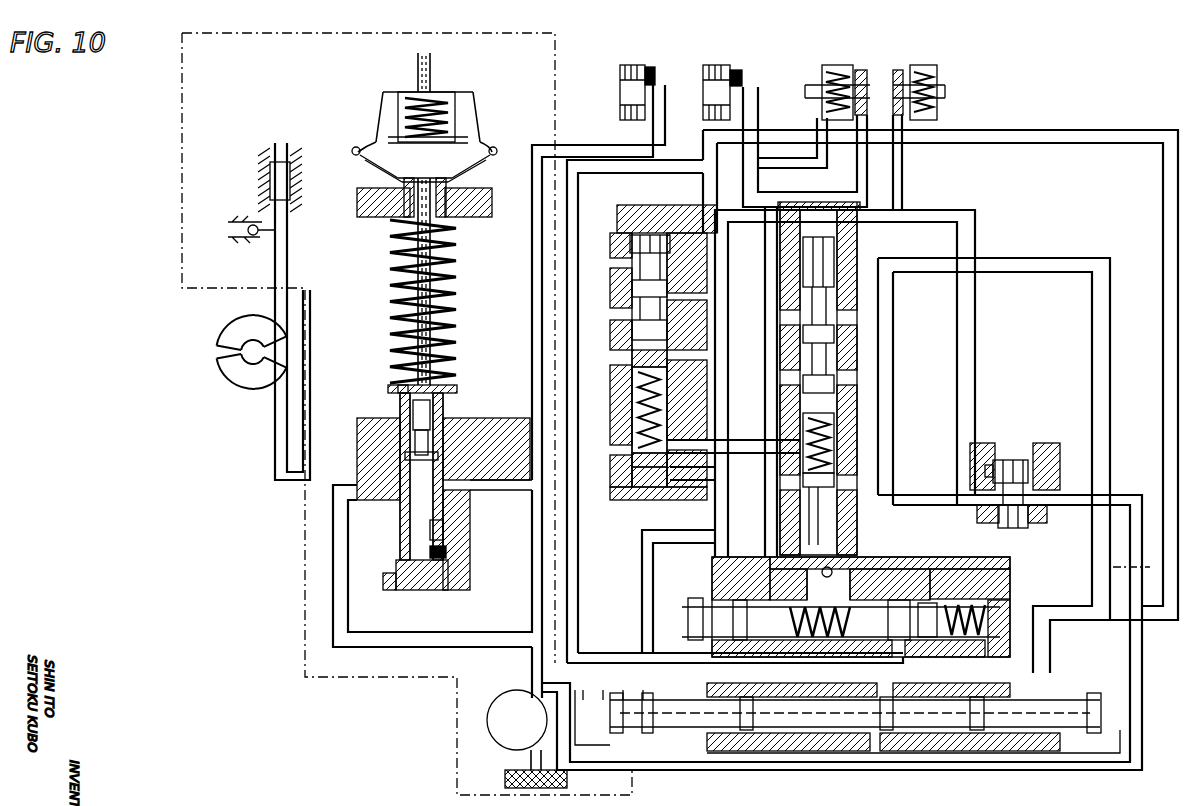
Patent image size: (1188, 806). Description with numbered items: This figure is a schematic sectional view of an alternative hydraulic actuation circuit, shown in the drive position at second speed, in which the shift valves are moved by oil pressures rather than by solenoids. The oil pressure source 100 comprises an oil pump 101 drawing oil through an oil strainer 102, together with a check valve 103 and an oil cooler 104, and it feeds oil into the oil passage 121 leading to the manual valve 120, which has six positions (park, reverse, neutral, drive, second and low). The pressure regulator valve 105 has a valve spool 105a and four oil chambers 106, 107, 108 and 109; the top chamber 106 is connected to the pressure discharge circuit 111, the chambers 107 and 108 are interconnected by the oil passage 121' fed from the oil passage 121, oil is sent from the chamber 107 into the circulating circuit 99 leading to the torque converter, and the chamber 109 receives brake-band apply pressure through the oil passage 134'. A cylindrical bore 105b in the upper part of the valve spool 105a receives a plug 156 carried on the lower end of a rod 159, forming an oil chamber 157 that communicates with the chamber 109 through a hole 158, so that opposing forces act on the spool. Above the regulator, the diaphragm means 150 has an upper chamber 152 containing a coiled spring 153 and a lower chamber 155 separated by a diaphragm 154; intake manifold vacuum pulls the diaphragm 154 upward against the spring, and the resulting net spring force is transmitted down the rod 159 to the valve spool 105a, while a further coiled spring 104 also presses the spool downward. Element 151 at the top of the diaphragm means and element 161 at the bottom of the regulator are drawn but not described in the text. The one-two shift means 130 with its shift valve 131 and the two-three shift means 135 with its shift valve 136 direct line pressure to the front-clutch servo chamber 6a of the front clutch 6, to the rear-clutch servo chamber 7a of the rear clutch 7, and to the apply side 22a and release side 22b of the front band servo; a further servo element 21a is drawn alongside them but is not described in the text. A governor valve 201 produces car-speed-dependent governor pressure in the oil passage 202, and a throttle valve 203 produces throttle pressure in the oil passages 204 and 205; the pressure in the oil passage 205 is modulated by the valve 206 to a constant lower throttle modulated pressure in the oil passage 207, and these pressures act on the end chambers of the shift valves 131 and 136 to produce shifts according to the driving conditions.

The clutch 6 is at (631, 64).
The front-clutch servo chamber 6a is at (655, 74).
The rear clutch 7 is at (715, 64).
The rear-clutch servo chamber 7a is at (742, 76).
The front band release side 22b is at (822, 66).
The apply side of the brake band servo 22a is at (862, 70).
The brake servo piston 21a is at (900, 70).
The circulating circuit 99 is at (275, 455).
The oil pressure source 100 is at (632, 790).
The oil pump 101 is at (504, 700).
The oil strainer 102 is at (506, 774).
The check valve 103 is at (250, 238).
The coiled spring 104 is at (288, 176).
The pressure regulator valve 105 is at (371, 410).
The valve spool 105a is at (456, 414).
The cylindrical bore 105b is at (392, 392).
The oil chamber 106 is at (445, 452).
The oil chamber 107 is at (450, 528).
The oil chamber 108 is at (450, 560).
The oil chamber 109 is at (428, 575).
The pressure discharge circuit 111 is at (398, 456).
The manual valve 120 is at (678, 716).
The oil passage 121 is at (687, 644).
The oil passage 121' is at (384, 561).
The 1-2 shift means 130 is at (787, 346).
The 1-2 shift valve 131 is at (843, 248).
The oil passage 134' is at (487, 454).
The 2-3 shift means 135 is at (600, 352).
The 2-3 shift valve 136 is at (653, 240).
The diaphragm means 150 is at (367, 89).
The vacuum rod 151 is at (431, 55).
The upper chamber 152 is at (470, 106).
The coiled spring 153 is at (404, 96).
The diaphragm 154 is at (478, 136).
The lower chamber 155 is at (466, 160).
The plug 156 is at (449, 391).
The oil chamber 157 is at (380, 440).
The hole 158 is at (452, 506).
The rod 159 is at (452, 256).
The plug retainer 161 is at (386, 580).
The governor valve 201 is at (1010, 460).
The oil passage 202 is at (972, 226).
The throttle valve 203 is at (896, 641).
The oil passage 204 is at (875, 576).
The oil passage 205 is at (768, 480).
The valve 206 is at (860, 310).
The oil passage 207 is at (766, 447).